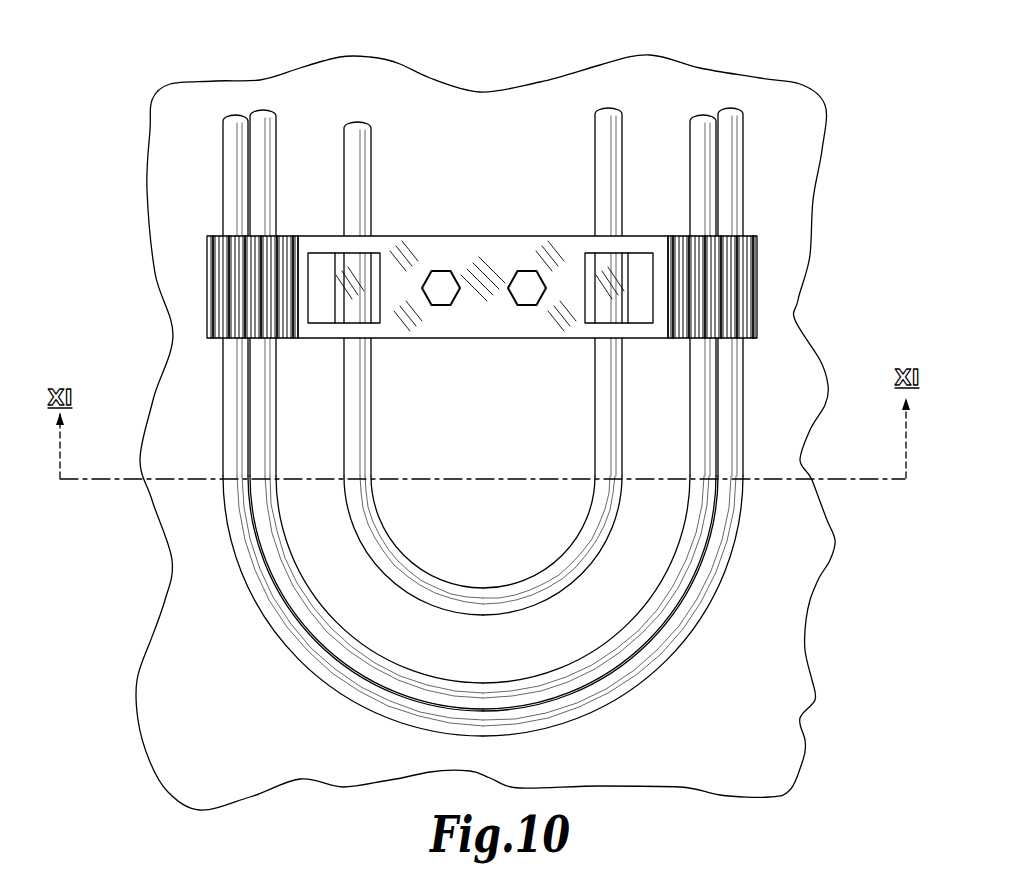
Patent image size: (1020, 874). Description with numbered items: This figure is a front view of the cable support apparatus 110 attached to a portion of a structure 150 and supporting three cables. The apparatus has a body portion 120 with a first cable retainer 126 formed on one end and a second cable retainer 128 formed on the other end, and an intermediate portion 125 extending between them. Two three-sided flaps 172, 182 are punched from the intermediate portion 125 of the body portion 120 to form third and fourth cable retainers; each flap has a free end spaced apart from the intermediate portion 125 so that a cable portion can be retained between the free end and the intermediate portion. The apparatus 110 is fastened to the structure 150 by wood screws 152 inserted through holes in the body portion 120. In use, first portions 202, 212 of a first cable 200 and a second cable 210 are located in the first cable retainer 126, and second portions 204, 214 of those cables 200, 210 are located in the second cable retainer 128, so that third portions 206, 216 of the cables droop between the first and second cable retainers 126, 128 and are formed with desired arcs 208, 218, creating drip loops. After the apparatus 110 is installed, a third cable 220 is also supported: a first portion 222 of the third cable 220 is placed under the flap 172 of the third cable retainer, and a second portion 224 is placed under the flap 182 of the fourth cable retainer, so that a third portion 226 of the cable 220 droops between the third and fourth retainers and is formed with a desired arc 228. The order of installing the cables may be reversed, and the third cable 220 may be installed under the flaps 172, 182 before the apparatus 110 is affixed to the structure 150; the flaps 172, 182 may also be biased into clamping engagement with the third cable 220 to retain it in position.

The cable support apparatus 110 is at (489, 270).
The body portion 120 is at (493, 228).
The intermediate portion 125 is at (436, 248).
The first cable retainer 126 is at (205, 280).
The second cable retainer 128 is at (762, 258).
The structure 150 is at (790, 622).
The wood screws 152 is at (441, 300).
The flap 172 is at (353, 262).
The flap 182 is at (617, 265).
The cable 200 is at (228, 112).
The first portion 202 is at (222, 347).
The second portion 204 is at (747, 343).
The third portion 206 is at (682, 656).
The arc 208 is at (553, 730).
The cable 210 is at (268, 104).
The first portion 212 is at (280, 347).
The second portion 214 is at (683, 345).
The third portion 216 is at (404, 660).
The arc 218 is at (553, 672).
The third cable 220 is at (358, 120).
The first portion 222 is at (373, 340).
The second portion 224 is at (590, 340).
The third portion 226 is at (598, 560).
The arc 228 is at (479, 584).